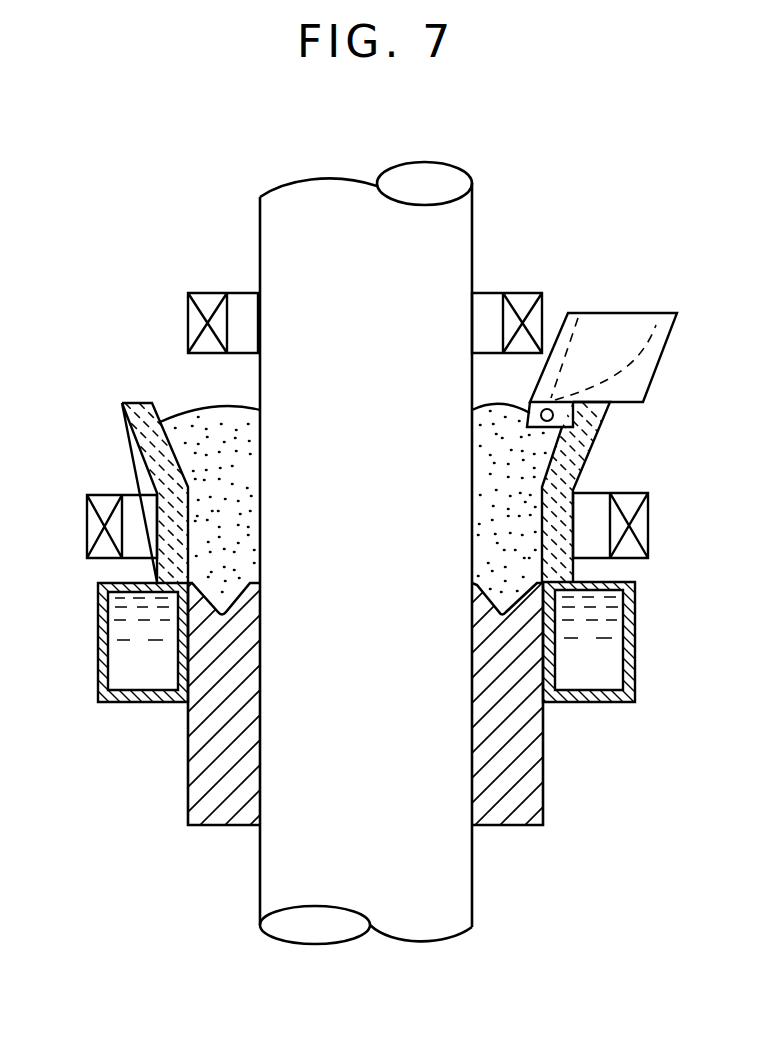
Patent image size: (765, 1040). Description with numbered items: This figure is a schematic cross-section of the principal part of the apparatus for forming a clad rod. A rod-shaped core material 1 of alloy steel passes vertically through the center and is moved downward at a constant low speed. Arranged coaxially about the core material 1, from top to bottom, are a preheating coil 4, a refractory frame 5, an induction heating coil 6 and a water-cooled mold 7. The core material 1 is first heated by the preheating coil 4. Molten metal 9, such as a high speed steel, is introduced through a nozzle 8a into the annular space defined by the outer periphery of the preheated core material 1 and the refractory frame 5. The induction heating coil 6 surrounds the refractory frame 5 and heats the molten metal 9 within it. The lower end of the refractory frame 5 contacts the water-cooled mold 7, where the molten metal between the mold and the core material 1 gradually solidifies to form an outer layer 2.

The core material 1 is at (455, 886).
The outer layer 2 is at (533, 773).
The preheating coil 4 is at (524, 300).
The refractory frame 5 is at (590, 452).
The induction heating coil 6 is at (90, 530).
The water-cooled mold 7 is at (120, 668).
The nozzle 8a is at (627, 325).
The molten metal 9 is at (192, 410).